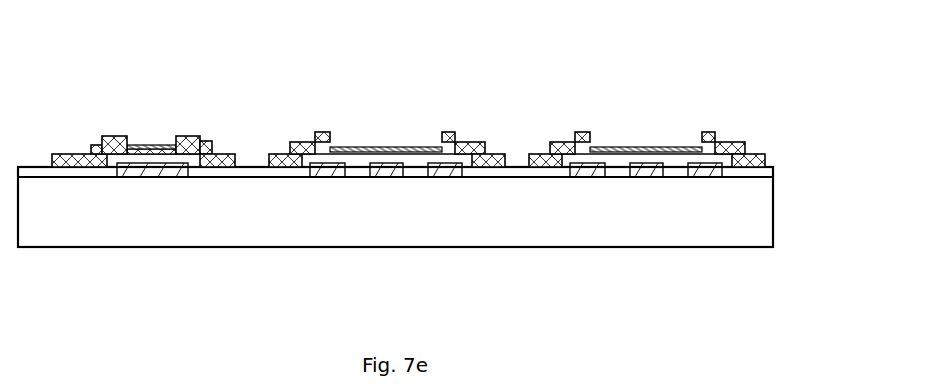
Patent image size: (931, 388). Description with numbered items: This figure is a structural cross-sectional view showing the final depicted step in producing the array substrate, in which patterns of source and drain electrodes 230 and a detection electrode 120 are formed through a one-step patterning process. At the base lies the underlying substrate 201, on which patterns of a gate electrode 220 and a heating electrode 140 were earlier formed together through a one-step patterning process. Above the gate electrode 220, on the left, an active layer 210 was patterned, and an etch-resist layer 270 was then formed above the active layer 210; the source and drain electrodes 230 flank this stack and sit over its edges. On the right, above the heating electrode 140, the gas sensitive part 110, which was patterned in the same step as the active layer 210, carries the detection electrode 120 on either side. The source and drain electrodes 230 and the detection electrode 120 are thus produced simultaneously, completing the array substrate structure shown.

The underlying substrate 201 is at (395, 239).
The gate electrode 220 is at (184, 232).
The active layer 210 is at (121, 106).
The etch-resist layer 270 is at (180, 103).
The source and drain electrodes 230 is at (98, 145).
The heating electrode 140 is at (690, 234).
The gas sensitive part 110 is at (650, 100).
The detection electrode 120 is at (560, 142).